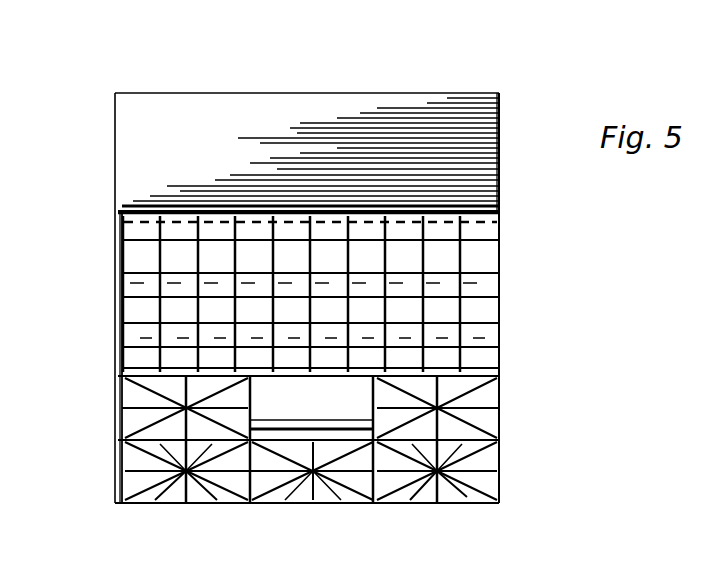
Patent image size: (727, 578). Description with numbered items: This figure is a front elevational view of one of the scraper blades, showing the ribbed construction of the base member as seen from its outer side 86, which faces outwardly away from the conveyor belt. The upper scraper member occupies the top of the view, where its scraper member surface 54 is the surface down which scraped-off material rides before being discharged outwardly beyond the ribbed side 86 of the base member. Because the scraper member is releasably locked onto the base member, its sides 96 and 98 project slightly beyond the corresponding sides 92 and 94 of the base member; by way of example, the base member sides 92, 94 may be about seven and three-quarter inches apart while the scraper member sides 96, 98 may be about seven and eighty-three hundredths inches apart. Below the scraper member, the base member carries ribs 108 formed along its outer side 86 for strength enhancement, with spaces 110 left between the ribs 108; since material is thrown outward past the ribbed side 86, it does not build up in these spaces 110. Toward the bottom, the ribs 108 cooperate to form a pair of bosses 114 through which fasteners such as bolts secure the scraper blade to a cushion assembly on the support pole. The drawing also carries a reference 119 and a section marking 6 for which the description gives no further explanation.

The scraper member surface 54 is at (198, 142).
The side of the scraper member 98 is at (115, 143).
The outer side of the base member 86 is at (480, 298).
The spaces between the ribs 110 is at (486, 250).
The ribs 108 is at (123, 303).
The radial brace hub 119 is at (196, 486).
The side of the base member 92 is at (503, 337).
The bosses 114 is at (447, 493).
The side of the base member 94 is at (120, 341).
The side of the scraper member 96 is at (507, 122).
The section line 6- 6 is at (525, 170).